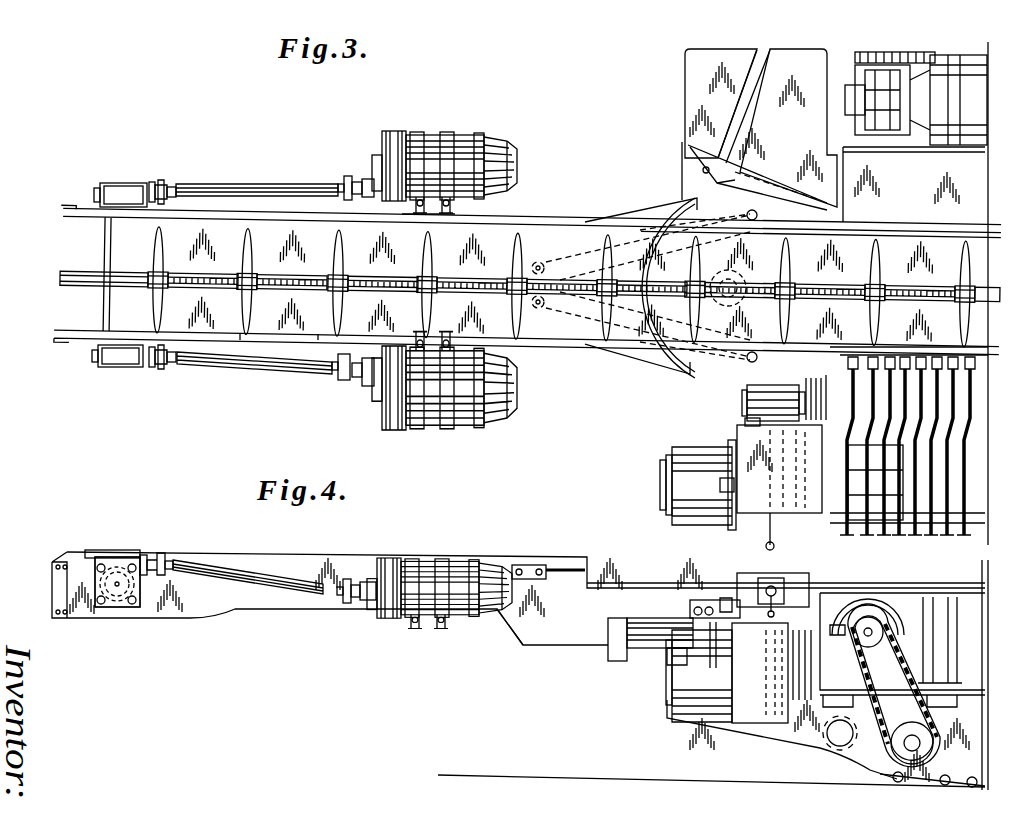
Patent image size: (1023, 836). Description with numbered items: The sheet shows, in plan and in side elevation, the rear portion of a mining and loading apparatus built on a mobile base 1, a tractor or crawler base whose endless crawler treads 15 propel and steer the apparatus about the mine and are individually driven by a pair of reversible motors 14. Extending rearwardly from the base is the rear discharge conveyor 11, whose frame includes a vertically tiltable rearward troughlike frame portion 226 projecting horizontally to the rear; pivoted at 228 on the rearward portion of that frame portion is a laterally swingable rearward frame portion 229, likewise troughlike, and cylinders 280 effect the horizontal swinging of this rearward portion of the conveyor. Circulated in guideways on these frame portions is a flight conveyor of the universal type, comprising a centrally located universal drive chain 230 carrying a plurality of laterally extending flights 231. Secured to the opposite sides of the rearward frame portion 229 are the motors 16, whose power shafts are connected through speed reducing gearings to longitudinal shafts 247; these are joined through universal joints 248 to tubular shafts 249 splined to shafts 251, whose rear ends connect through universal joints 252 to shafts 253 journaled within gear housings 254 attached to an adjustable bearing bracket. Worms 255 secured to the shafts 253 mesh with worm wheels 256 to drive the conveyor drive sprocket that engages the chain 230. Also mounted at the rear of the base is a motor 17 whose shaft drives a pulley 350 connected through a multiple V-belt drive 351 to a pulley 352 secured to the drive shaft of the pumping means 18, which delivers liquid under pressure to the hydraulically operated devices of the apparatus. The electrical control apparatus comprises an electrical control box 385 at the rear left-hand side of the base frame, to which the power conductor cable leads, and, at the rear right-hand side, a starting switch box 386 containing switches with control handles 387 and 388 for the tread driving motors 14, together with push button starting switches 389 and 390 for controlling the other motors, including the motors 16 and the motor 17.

In FIG. 4, the mobile base 1 is at (845, 762).
In FIG. 3, the rear discharge conveyor 11 is at (315, 343).
In FIG. 3, the reversible motors 14 is at (955, 62).
In FIG. 4, the reversible motors 14 is at (968, 615).
In FIG. 4, the endless crawler treads 15 is at (968, 776).
In FIG. 3, the motors 16 is at (470, 142).
In FIG. 4, the motors 16 is at (490, 618).
In FIG. 3, the motor 17 is at (675, 448).
In FIG. 4, the motor 17 is at (672, 705).
In FIG. 3, the pumping means 18 is at (745, 400).
In FIG. 3, the rearward troughlike frame portion 226 is at (907, 222).
In FIG. 4, the rearward troughlike frame portion 226 is at (565, 647).
In FIG. 3, the pivot 228 is at (742, 282).
In FIG. 3, the laterally swingable rearward frame portion 229 is at (250, 342).
In FIG. 4, the laterally swingable rearward frame portion 229 is at (372, 554).
In FIG. 3, the universal drive chain 230 is at (92, 282).
In FIG. 4, the universal drive chain 230 is at (690, 632).
In FIG. 3, the flights 231 is at (345, 236).
In FIG. 3, the longitudinal shafts 247 is at (366, 178).
In FIG. 4, the longitudinal shafts 247 is at (368, 600).
In FIG. 3, the universal joints 248 is at (346, 176).
In FIG. 4, the universal joints 248 is at (342, 600).
In FIG. 3, the tubular shafts 249 is at (292, 176).
In FIG. 4, the tubular shafts 249 is at (295, 590).
In FIG. 3, the shafts 251 is at (178, 191).
In FIG. 4, the shafts 251 is at (175, 577).
In FIG. 3, the universal joints 252 is at (168, 183).
In FIG. 4, the universal joints 252 is at (166, 562).
In FIG. 3, the shafts 253 is at (152, 181).
In FIG. 4, the shafts 253 is at (150, 558).
In FIG. 3, the gear housings 254 is at (130, 185).
In FIG. 4, the gear housings 254 is at (100, 555).
In FIG. 4, the worms 255 is at (117, 568).
In FIG. 4, the worm wheels 256 is at (127, 608).
In FIG. 3, the cylinders 280 is at (655, 220).
In FIG. 4, the cylinders 280 is at (640, 636).
In FIG. 3, the pulley 350 is at (798, 512).
In FIG. 4, the pulley 350 is at (790, 665).
In FIG. 3, the multiple V-belt drive 351 is at (812, 378).
In FIG. 4, the multiple V-belt drive 351 is at (800, 686).
In FIG. 3, the pulley 352 is at (806, 392).
In FIG. 3, the electrical control box 385 is at (688, 66).
In FIG. 3, the starting switch box 386 is at (737, 432).
In FIG. 4, the starting switch box 386 is at (758, 573).
In FIG. 3, the control handle 387 is at (766, 530).
In FIG. 4, the control handle 387 is at (790, 598).
In FIG. 4, the control handle 388 is at (759, 673).
In FIG. 3, the push button starting switch 389 is at (678, 461).
In FIG. 3, the push button starting switch 390 is at (722, 490).
In FIG. 4, the push button starting switch 390 is at (722, 598).